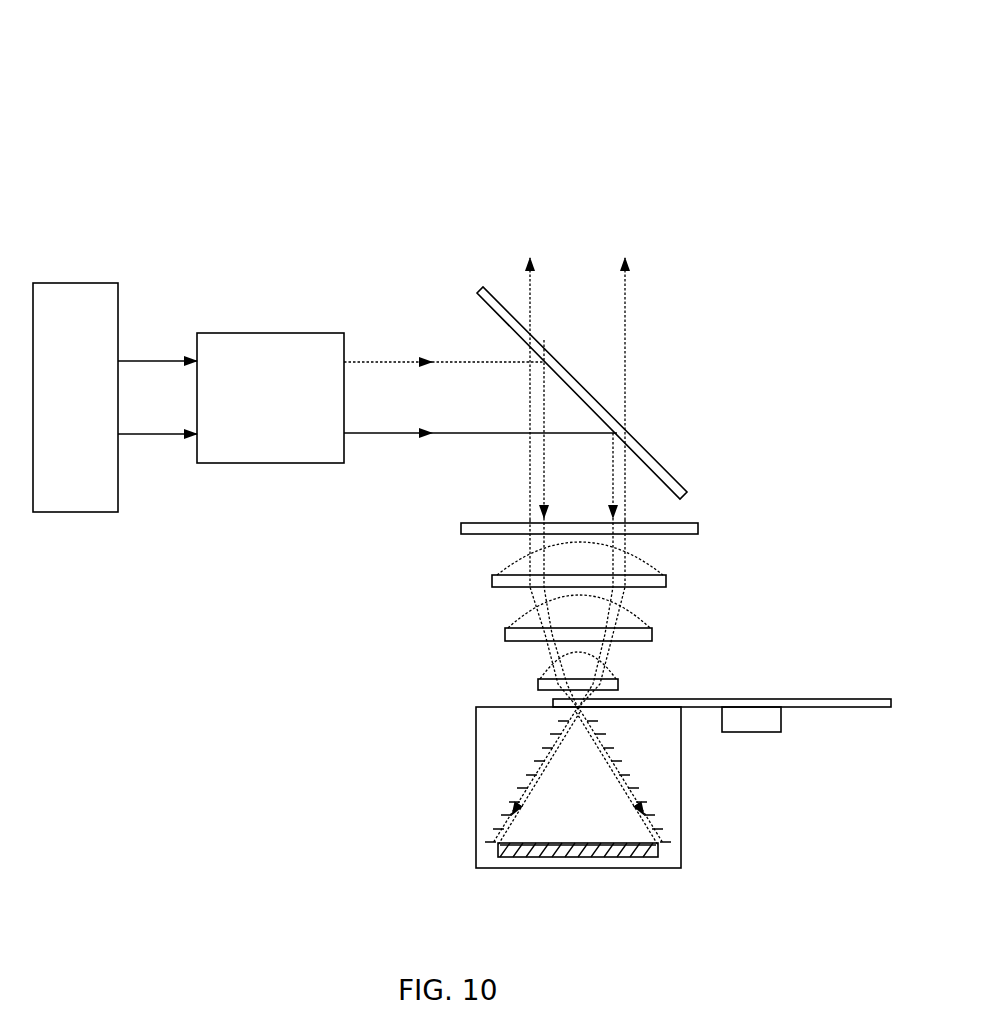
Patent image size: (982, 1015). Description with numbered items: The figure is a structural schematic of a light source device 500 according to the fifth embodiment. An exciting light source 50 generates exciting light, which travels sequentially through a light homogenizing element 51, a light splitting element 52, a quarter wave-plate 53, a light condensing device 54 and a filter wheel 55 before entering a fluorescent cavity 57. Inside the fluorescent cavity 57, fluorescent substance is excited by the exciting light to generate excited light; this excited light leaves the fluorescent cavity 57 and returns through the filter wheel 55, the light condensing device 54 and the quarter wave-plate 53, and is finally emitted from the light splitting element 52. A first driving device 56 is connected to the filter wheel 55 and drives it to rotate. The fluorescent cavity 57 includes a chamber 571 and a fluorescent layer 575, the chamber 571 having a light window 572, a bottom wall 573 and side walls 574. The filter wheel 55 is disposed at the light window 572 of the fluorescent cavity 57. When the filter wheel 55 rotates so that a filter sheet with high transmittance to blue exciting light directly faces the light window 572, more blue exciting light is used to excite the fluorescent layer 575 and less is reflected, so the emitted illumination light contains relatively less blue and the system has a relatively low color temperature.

The light source device 500 is at (435, 62).
The exciting light source 50 is at (58, 292).
The light homogenizing element 51 is at (253, 343).
The light splitting element 52 is at (641, 452).
The quarter wave-plate 53 is at (468, 530).
The light condensing device 54 is at (503, 582).
The filter wheel 55 is at (762, 705).
The first driving device 56 is at (765, 722).
The fluorescent cavity 57 is at (530, 819).
The chamber 571 is at (570, 858).
The light window 572 is at (578, 708).
The bottom wall 573 is at (530, 857).
The side walls 574 is at (540, 768).
The fluorescent layer 575 is at (630, 850).